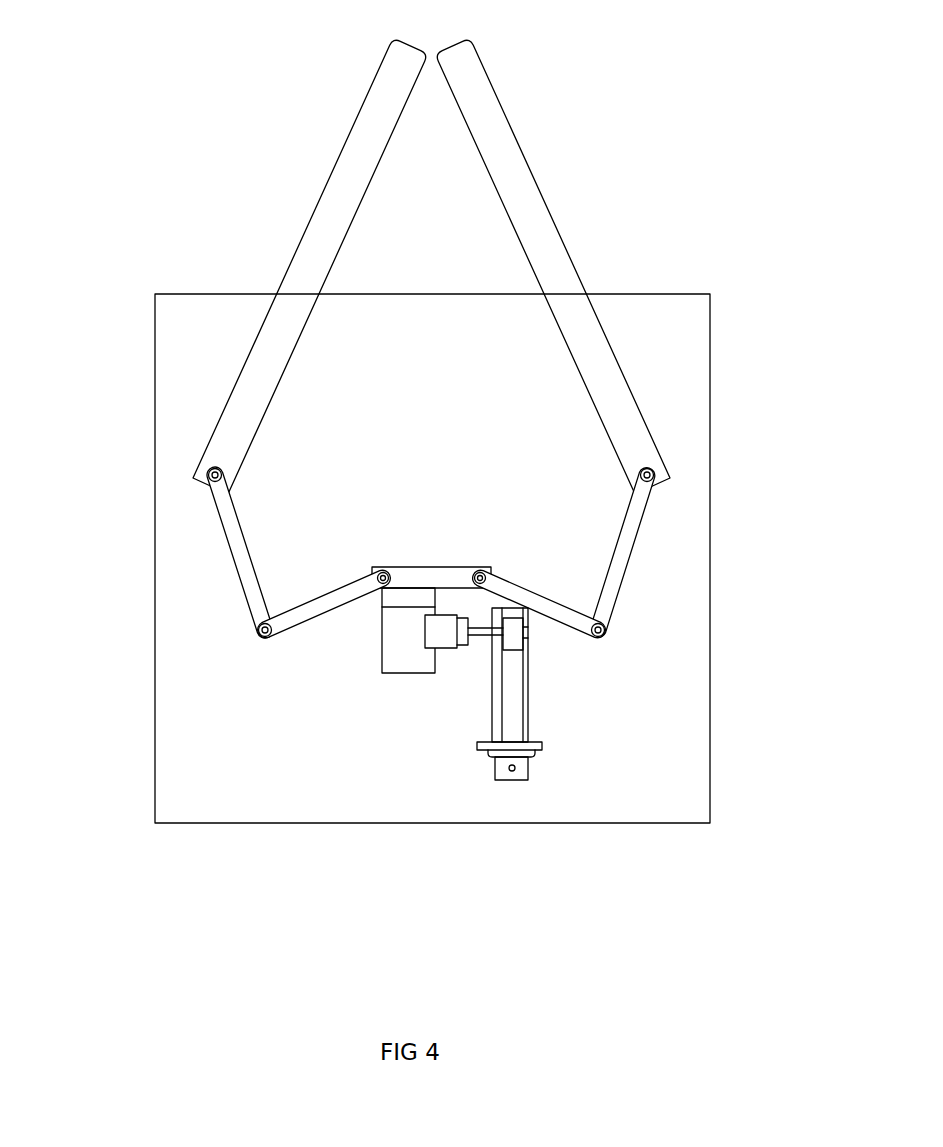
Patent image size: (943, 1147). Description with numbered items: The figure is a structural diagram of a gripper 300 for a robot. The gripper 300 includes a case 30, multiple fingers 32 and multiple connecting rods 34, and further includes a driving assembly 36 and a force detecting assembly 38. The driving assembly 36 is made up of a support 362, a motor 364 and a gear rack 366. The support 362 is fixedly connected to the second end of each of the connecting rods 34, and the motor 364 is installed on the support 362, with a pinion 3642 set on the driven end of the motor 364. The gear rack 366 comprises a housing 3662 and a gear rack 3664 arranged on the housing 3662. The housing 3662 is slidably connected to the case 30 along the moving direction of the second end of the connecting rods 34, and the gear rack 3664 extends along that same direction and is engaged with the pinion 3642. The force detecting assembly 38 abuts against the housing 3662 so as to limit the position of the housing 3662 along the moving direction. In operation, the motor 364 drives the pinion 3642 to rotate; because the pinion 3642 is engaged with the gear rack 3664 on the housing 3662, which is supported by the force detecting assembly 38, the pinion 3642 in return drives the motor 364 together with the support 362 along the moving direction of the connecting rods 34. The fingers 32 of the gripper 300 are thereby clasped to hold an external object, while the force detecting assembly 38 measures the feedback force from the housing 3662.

The gripper 300 is at (95, 90).
The case 30 is at (198, 765).
The fingers 32 is at (530, 200).
The connecting rods 34 is at (300, 607).
The driving assembly 36 is at (426, 712).
The support 362 is at (394, 597).
The motor 364 is at (567, 756).
The pinion 3642 is at (513, 640).
The gear rack 366 is at (599, 753).
The housing 3662 is at (530, 722).
The gear rack 3664 is at (513, 685).
The force detecting assembly 38 is at (530, 757).